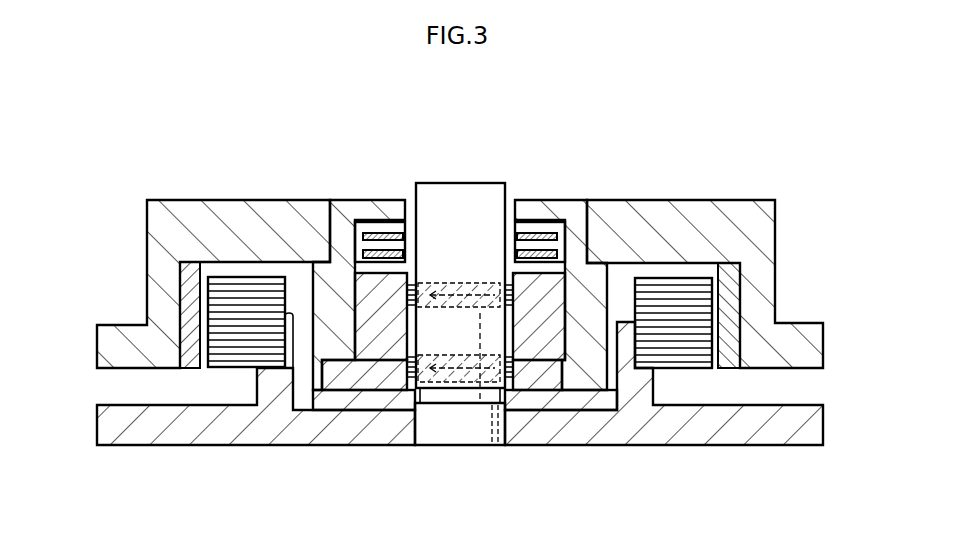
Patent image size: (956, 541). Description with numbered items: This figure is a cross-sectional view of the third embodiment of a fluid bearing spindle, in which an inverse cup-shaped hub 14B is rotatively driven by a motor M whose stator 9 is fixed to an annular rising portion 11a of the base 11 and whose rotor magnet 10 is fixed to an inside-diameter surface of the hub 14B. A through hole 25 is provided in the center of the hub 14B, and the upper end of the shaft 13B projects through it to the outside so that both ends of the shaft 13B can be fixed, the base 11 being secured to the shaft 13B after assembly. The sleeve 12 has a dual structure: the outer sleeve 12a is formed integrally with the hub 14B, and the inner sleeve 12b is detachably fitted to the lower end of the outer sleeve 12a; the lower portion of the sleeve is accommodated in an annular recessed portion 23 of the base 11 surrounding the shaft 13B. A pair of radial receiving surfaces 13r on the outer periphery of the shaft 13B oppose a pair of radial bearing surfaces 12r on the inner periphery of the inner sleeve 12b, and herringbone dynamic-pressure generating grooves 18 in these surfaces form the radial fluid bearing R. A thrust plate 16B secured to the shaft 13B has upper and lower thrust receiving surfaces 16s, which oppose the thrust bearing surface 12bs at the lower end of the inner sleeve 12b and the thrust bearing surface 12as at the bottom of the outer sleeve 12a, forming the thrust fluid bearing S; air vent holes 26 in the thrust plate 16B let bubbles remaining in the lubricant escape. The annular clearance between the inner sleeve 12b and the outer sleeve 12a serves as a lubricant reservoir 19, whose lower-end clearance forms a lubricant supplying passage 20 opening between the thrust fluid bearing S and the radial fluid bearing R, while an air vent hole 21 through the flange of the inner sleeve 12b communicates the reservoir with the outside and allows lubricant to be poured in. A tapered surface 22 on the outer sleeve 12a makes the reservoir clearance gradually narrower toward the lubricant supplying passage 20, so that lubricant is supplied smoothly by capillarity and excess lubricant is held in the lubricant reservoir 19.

The stator 9 is at (210, 313).
The rotor magnet 10 is at (190, 280).
The base 11 is at (158, 436).
The annular rising portion 11a is at (656, 430).
The sleeve 12 is at (260, 488).
The outer sleeve 12a is at (309, 357).
The inner sleeve 12b is at (347, 355).
The thrust bearing surface 12bs is at (365, 236).
The thrust bearing surface 12as is at (372, 252).
The radial bearing surfaces 12r is at (423, 290).
The shaft 13B is at (460, 183).
The radial receiving surfaces 13r is at (391, 340).
The hub 14B is at (751, 213).
The thrust plate 16B is at (352, 237).
The thrust receiving surfaces 16s is at (409, 268).
The dynamic-pressure generating grooves 18 is at (497, 418).
The lubricant reservoir 19 is at (600, 335).
The lubricant supplying passage 20 is at (588, 262).
The air vent hole 21 is at (553, 375).
The tapered surface 22 is at (585, 378).
The annular recessed portion 23 is at (523, 400).
The through hole 25 is at (515, 212).
The air vent holes 26 is at (557, 272).
The motor M is at (96, 263).
The thrust fluid bearing S is at (430, 131).
The radial fluid bearing R is at (378, 488).